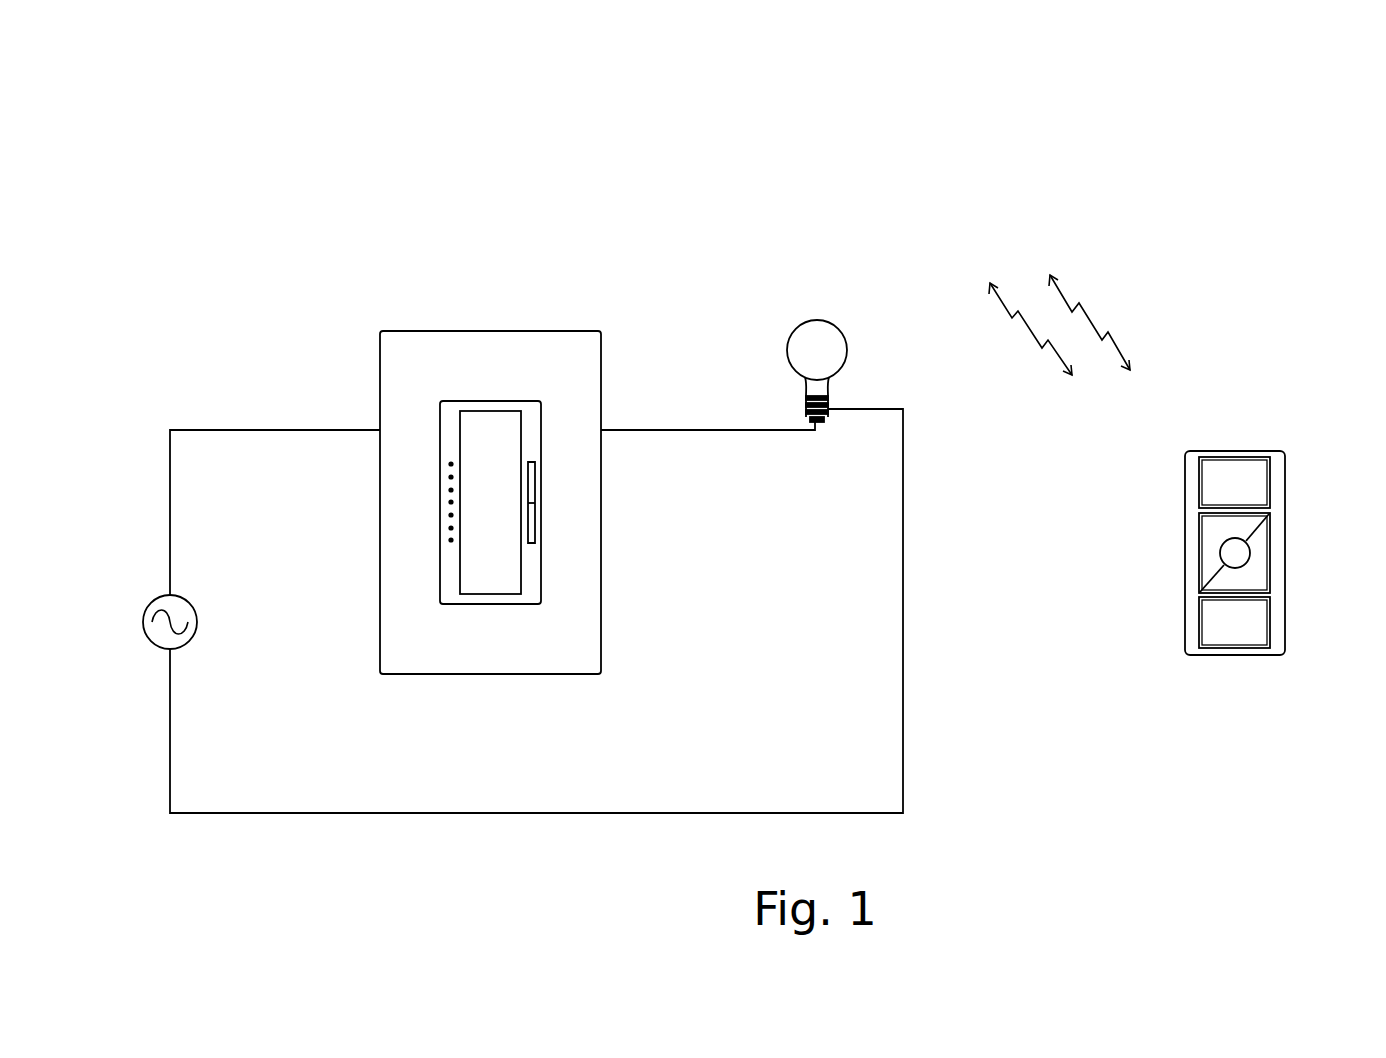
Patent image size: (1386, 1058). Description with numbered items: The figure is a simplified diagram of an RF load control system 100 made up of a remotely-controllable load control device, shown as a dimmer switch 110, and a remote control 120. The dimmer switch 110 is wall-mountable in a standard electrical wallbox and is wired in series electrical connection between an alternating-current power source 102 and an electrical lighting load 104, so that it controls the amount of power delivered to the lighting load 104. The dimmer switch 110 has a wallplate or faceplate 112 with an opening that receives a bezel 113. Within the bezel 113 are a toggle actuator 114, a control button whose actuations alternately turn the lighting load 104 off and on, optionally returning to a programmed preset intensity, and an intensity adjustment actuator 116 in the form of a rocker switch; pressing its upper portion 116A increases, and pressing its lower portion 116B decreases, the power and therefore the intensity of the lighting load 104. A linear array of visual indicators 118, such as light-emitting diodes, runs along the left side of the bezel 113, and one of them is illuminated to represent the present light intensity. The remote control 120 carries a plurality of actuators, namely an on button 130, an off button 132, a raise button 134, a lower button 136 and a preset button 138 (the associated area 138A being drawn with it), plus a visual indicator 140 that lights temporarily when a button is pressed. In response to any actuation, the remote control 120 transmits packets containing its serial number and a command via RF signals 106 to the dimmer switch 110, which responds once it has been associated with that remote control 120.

The RF load control system 100 is at (938, 150).
The alternating-current power source 102 is at (153, 645).
The electrical lighting load 104 is at (815, 352).
The RF signals 106 is at (1138, 308).
The dimmer switch 110 is at (362, 360).
The wallplate 112 is at (448, 360).
The bezel 113 is at (445, 586).
The toggle actuator 114 is at (510, 590).
The intensity adjustment actuator 116 is at (641, 523).
The upper portion 116A is at (535, 483).
The lower portion 116B is at (535, 520).
The visual indicators 118 is at (440, 502).
The remote control 120 is at (1183, 678).
The on button 130 is at (1235, 470).
The off button 132 is at (1243, 625).
The raise button 134 is at (1213, 537).
The lower button 136 is at (1245, 575).
The preset button 138 is at (1149, 585).
The preset button indicator 138A is at (1233, 553).
The visual indicator 140 is at (1192, 468).